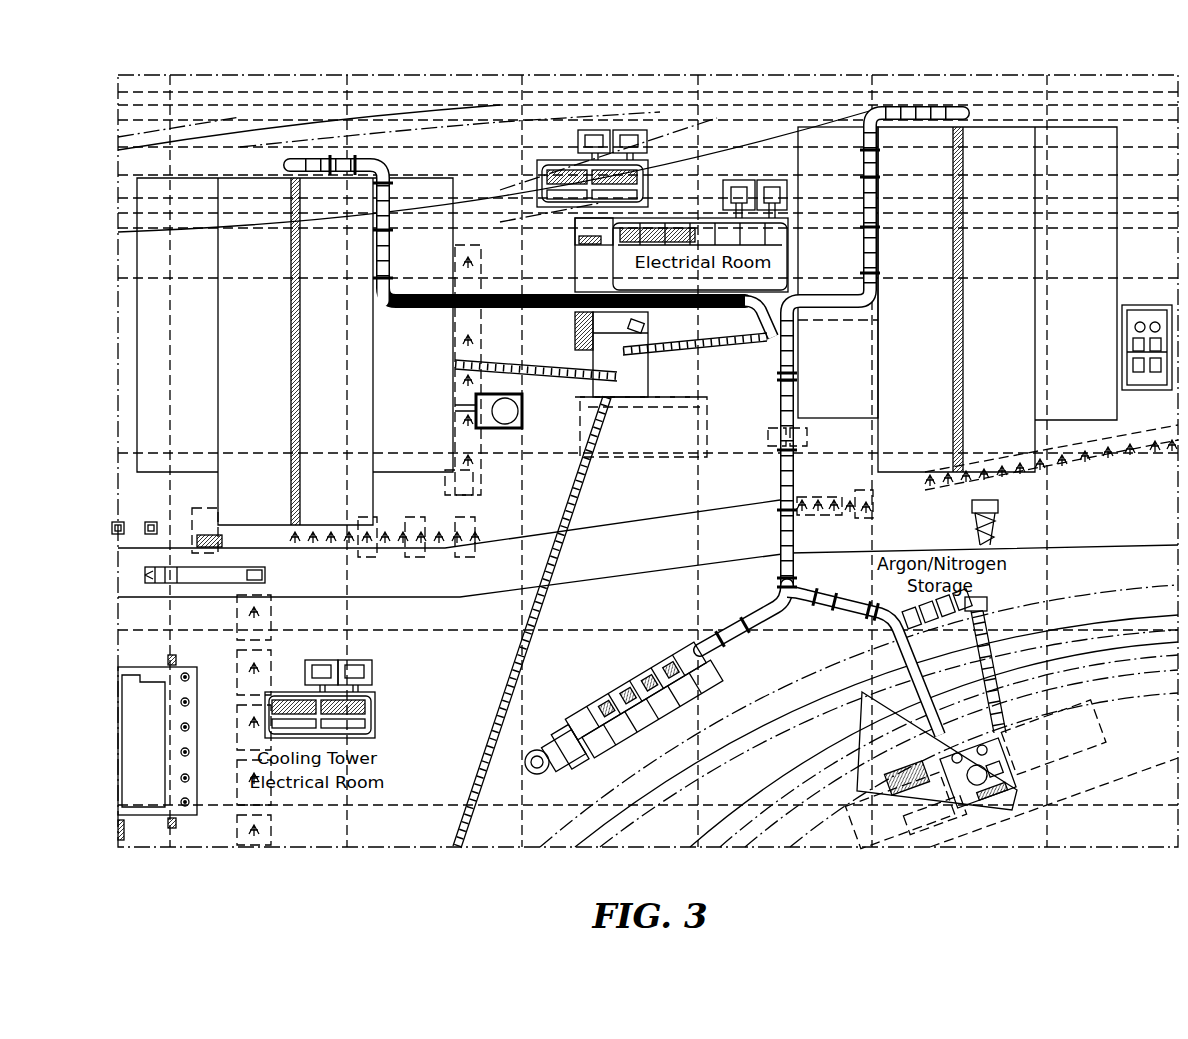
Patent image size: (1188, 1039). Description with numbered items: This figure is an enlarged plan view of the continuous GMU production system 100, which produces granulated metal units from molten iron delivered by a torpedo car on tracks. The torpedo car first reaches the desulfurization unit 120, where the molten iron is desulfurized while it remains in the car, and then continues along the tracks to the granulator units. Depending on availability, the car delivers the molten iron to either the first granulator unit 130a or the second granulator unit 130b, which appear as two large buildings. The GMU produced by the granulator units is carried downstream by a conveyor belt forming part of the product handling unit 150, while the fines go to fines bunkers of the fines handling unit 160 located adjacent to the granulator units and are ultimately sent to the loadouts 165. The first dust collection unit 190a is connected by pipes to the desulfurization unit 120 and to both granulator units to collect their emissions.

The continuous GMU production system 100 is at (124, 40).
The desulfurization unit 120 is at (1033, 757).
The first granulator unit 130a is at (1018, 266).
The second granulator unit 130b is at (234, 400).
The product handling unit 150 is at (484, 664).
The fines handling unit 160 is at (512, 384).
The loadout 165 is at (685, 295).
The first dust collection unit 190a is at (622, 634).